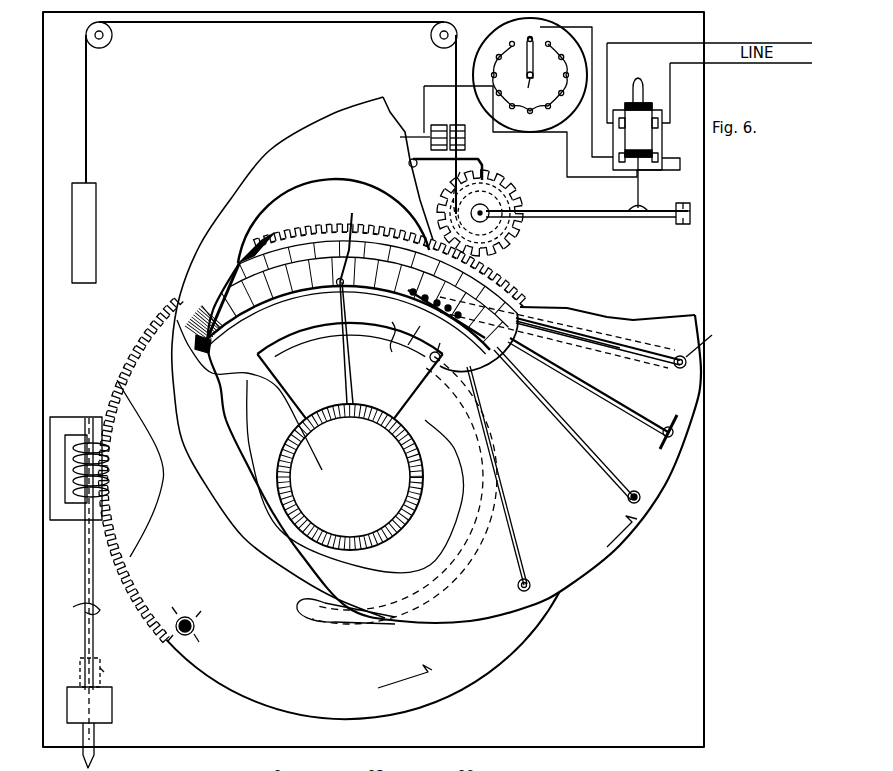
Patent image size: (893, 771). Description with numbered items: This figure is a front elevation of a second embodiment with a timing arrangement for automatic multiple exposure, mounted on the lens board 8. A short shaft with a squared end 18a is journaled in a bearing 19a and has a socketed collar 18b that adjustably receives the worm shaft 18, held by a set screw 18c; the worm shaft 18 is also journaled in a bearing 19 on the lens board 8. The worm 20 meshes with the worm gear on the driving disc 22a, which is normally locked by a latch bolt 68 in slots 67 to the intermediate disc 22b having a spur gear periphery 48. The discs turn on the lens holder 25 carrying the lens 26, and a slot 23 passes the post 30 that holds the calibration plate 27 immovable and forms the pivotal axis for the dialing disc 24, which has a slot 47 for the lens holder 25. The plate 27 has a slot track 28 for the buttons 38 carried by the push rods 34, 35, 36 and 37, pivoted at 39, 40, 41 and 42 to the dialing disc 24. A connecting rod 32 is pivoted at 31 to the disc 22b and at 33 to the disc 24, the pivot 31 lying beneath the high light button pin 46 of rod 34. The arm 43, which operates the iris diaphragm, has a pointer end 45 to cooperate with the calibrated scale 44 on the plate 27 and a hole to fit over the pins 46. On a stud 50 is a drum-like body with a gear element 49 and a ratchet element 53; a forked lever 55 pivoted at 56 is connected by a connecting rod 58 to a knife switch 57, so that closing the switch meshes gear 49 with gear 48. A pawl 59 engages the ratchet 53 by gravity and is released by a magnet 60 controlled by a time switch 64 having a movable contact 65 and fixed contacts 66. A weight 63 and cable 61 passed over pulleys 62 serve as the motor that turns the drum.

The lens board 8 is at (690, 653).
The worm shaft 18 is at (94, 638).
The squared end 18a is at (95, 760).
The socketed collar 18b is at (80, 668).
The set screw 18c is at (104, 670).
The bearing 19 is at (62, 425).
The bearing 19a is at (98, 705).
The worm 20 is at (110, 470).
The driving disc 22a is at (143, 508).
The intermediate disc 22b is at (402, 618).
The slot 23 is at (300, 604).
The dialing disc 24 is at (685, 387).
The lens holder 25 is at (395, 522).
The lens 26 is at (383, 490).
The calibration plate 27 is at (217, 368).
The slot track 28 is at (200, 352).
The post 30 is at (432, 362).
The pivot 31 is at (515, 328).
The connecting rod 32 is at (613, 336).
The pivot 33 is at (710, 335).
The push rod 34 is at (568, 347).
The push rod 35 is at (585, 434).
The push rod 36 is at (505, 512).
The push rod 37 is at (618, 406).
The buttons 38 is at (390, 330).
The pivot 39 is at (687, 360).
The pivot 40 is at (641, 500).
The pivot 41 is at (530, 578).
The pivot 42 is at (676, 430).
The arm 43 is at (348, 377).
The scale sector 44 is at (345, 232).
The pointer 45 is at (337, 327).
The high light button pin 46 is at (408, 347).
The slot 47 is at (444, 455).
The spur gear periphery 48 is at (518, 288).
The gear element 49 is at (520, 240).
The stud 50 is at (490, 218).
The ratchet element 53 is at (445, 205).
The forked lever 55 is at (609, 218).
The pivot 56 is at (681, 225).
The knife switch 57 is at (655, 137).
The connecting rod 58 is at (645, 200).
The pawl 59 is at (476, 162).
The magnet 60 is at (408, 137).
The cable 61 is at (283, 24).
The pulleys 62 is at (108, 46).
The weight 63 is at (85, 228).
The time switch 64 is at (583, 64).
The movable contact 65 is at (526, 66).
The fixed contacts 66 is at (553, 43).
The slots 67 is at (176, 645).
The latch bolt 68 is at (192, 618).